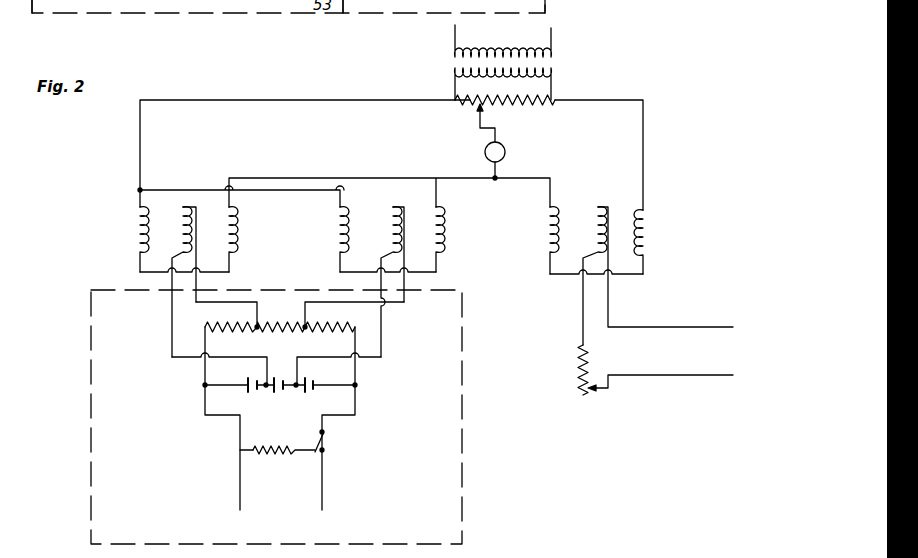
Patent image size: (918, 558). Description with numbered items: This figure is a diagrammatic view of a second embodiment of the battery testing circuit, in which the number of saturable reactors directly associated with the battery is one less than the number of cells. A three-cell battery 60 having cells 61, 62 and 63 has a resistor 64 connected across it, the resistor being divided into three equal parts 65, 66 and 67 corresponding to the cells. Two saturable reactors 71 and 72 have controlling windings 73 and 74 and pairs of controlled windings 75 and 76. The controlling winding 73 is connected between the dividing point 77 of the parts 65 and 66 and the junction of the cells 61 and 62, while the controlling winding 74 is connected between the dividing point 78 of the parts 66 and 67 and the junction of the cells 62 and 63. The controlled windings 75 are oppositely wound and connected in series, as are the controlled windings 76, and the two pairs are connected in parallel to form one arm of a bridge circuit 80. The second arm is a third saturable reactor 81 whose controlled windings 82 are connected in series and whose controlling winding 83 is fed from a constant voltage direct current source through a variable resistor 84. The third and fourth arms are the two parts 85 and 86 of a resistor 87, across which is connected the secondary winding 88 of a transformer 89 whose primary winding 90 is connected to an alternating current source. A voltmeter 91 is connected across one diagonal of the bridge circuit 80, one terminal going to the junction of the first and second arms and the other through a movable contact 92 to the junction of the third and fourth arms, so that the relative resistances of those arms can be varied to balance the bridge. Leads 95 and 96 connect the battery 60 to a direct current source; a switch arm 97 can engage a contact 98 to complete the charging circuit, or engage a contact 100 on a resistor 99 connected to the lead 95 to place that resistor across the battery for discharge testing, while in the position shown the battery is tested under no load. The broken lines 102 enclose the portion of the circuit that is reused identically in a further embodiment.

The battery 60 is at (280, 444).
The cell 61 is at (253, 392).
The cell 62 is at (280, 394).
The cell 63 is at (318, 396).
The resistor 64 is at (290, 339).
The part 65 is at (210, 324).
The part 66 is at (292, 321).
The part 67 is at (340, 312).
The saturable reactor 71 is at (183, 280).
The saturable reactor 72 is at (391, 282).
The controlling winding 73 is at (153, 258).
The controlling winding 74 is at (393, 226).
The controlled windings 75 is at (140, 222).
The controlled windings 76 is at (340, 238).
The dividing point 77 is at (259, 325).
The dividing point 78 is at (305, 331).
The bridge circuit 80 is at (302, 97).
The third saturable reactor 81 is at (624, 267).
The controlled windings 82 is at (549, 230).
The controlling winding 83 is at (600, 212).
The variable resistor 84 is at (582, 373).
The part 85 is at (512, 108).
The part 86 is at (464, 105).
The resistor 87 is at (530, 112).
The secondary winding 88 is at (556, 75).
The transformer 89 is at (521, 76).
The primary winding 90 is at (548, 50).
The voltmeter 91 is at (506, 152).
The movable contact 92 is at (478, 126).
The lead 95 is at (240, 451).
The lead 96 is at (282, 458).
The switch arm 97 is at (320, 432).
The contact 98 is at (320, 452).
The resistor 99 is at (262, 456).
The contact 100 is at (306, 452).
The broken lines 102 is at (462, 426).